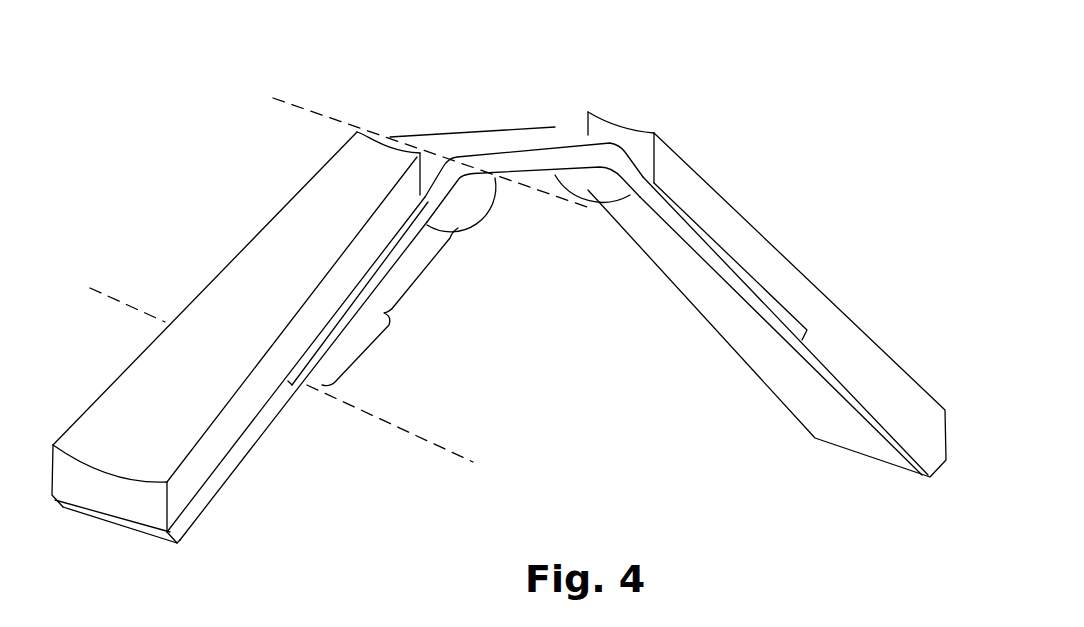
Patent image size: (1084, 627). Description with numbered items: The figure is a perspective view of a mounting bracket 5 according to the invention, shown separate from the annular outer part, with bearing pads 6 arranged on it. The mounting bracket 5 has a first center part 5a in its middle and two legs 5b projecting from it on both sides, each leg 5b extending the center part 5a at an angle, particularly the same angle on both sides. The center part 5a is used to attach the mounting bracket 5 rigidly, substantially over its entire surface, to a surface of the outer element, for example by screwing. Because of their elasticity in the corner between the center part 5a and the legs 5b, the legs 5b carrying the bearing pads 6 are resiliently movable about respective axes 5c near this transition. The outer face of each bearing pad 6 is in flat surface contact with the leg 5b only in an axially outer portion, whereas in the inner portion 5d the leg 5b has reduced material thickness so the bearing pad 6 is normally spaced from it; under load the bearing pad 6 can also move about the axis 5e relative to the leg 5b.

The mounting bracket 5 is at (509, 285).
The first center part 5a is at (520, 163).
The leg 5b is at (270, 428).
The axis 5c is at (305, 110).
The inner portion of leg 5d is at (390, 307).
The axis 5e is at (443, 457).
The bearing pad 6 is at (193, 388).